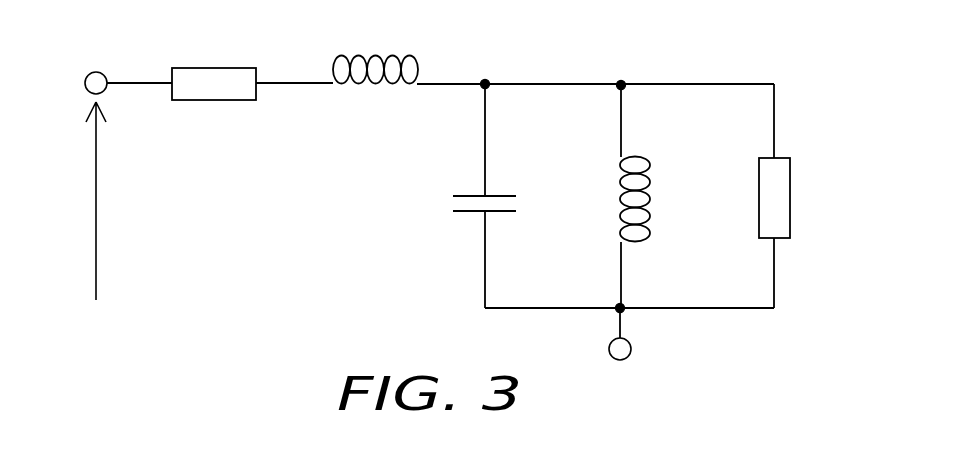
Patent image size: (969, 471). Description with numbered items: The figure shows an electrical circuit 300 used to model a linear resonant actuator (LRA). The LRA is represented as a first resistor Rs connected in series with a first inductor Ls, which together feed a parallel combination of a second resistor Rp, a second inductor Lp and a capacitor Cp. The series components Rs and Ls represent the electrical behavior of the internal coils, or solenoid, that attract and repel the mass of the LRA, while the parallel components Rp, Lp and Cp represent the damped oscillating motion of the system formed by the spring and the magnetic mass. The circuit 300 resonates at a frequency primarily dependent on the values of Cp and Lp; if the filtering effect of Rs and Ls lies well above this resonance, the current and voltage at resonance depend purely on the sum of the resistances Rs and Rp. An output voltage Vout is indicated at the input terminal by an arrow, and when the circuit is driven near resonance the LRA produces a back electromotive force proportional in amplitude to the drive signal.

The circuit 300 is at (133, 29).
The first resistor Rs is at (214, 99).
The first inductor Ls is at (375, 86).
The capacitor Cp is at (501, 196).
The second inductor Lp is at (651, 196).
The second resistor Rp is at (792, 196).
The output voltage Vout is at (75, 201).